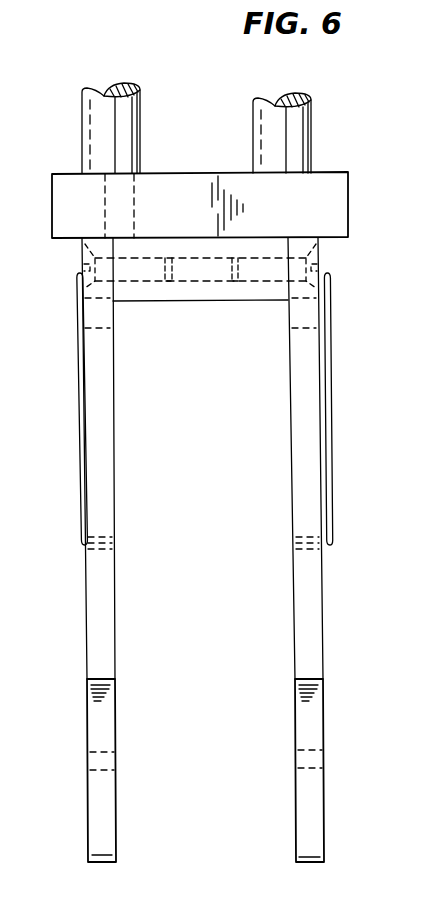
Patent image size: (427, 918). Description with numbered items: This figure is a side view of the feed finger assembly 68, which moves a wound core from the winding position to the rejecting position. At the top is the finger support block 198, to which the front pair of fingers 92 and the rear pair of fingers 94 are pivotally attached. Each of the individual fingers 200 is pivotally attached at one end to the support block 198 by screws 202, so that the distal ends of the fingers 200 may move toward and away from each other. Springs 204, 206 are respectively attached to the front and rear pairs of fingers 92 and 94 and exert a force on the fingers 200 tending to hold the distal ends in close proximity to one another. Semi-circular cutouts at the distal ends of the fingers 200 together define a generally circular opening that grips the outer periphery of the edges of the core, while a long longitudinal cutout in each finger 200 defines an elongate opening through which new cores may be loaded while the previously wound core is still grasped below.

The feed finger assembly 68 is at (78, 590).
The finger support block 198 is at (291, 209).
The fingers 200 is at (112, 628).
The screws 202 is at (150, 273).
The spring 204 is at (78, 417).
The spring 206 is at (328, 415).
The front pair of fingers 92 is at (95, 665).
The rear pair of fingers 94 is at (313, 670).